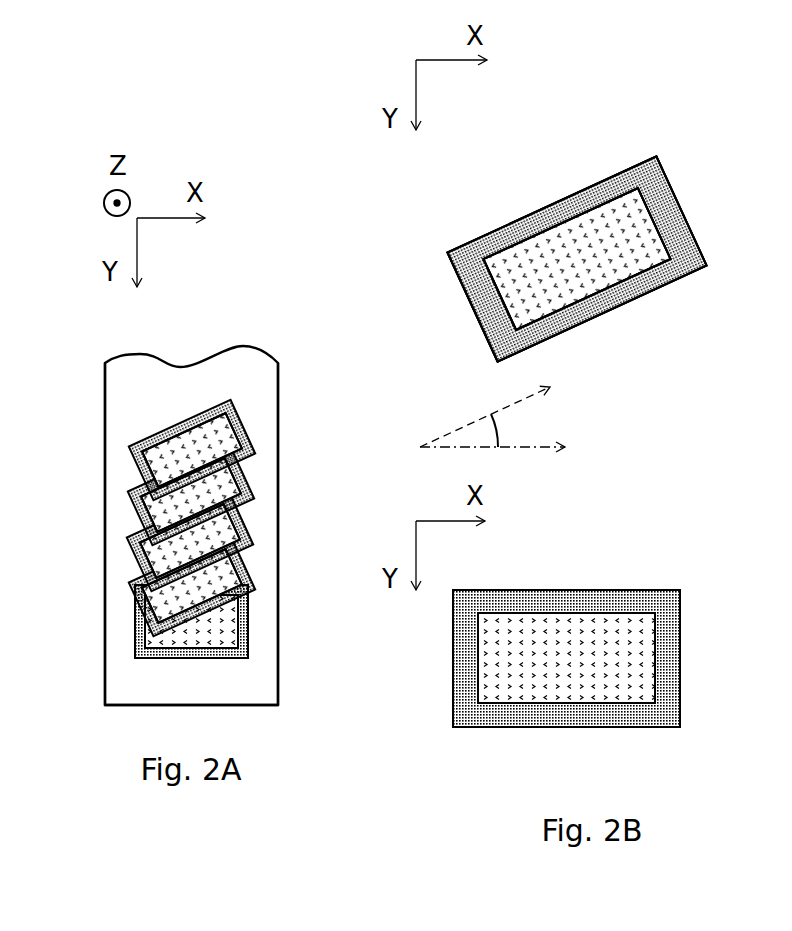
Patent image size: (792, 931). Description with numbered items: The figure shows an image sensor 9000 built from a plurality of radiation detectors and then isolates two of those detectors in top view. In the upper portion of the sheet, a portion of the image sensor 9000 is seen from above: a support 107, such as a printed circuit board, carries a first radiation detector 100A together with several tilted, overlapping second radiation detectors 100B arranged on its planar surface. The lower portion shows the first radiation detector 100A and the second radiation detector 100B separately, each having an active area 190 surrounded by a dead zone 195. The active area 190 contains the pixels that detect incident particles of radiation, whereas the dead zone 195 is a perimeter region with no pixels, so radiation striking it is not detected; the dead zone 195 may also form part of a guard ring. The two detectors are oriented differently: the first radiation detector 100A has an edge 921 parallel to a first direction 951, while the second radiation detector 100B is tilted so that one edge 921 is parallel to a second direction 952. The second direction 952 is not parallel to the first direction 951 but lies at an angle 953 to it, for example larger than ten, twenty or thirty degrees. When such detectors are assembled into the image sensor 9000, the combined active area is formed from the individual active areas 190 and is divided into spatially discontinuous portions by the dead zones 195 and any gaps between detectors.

In FIG. 2A, the image sensor 9000 is at (257, 352).
In FIG. 2A, the support 107 is at (191, 534).
In FIG. 2A, the first radiation detector 100A is at (191, 621).
In FIG. 2B, the first radiation detector 100A is at (599, 634).
In FIG. 2A, the second radiation detector 100B is at (191, 518).
In FIG. 2B, the second radiation detector 100B is at (597, 238).
In FIG. 2B, the dead zone 195 is at (645, 178).
In FIG. 2B, the active area 190 is at (527, 290).
In FIG. 2B, the edge 921 is at (641, 300).
In FIG. 2B, the first direction 951 is at (522, 457).
In FIG. 2B, the second direction 952 is at (457, 423).
In FIG. 2B, the angle 953 is at (505, 430).